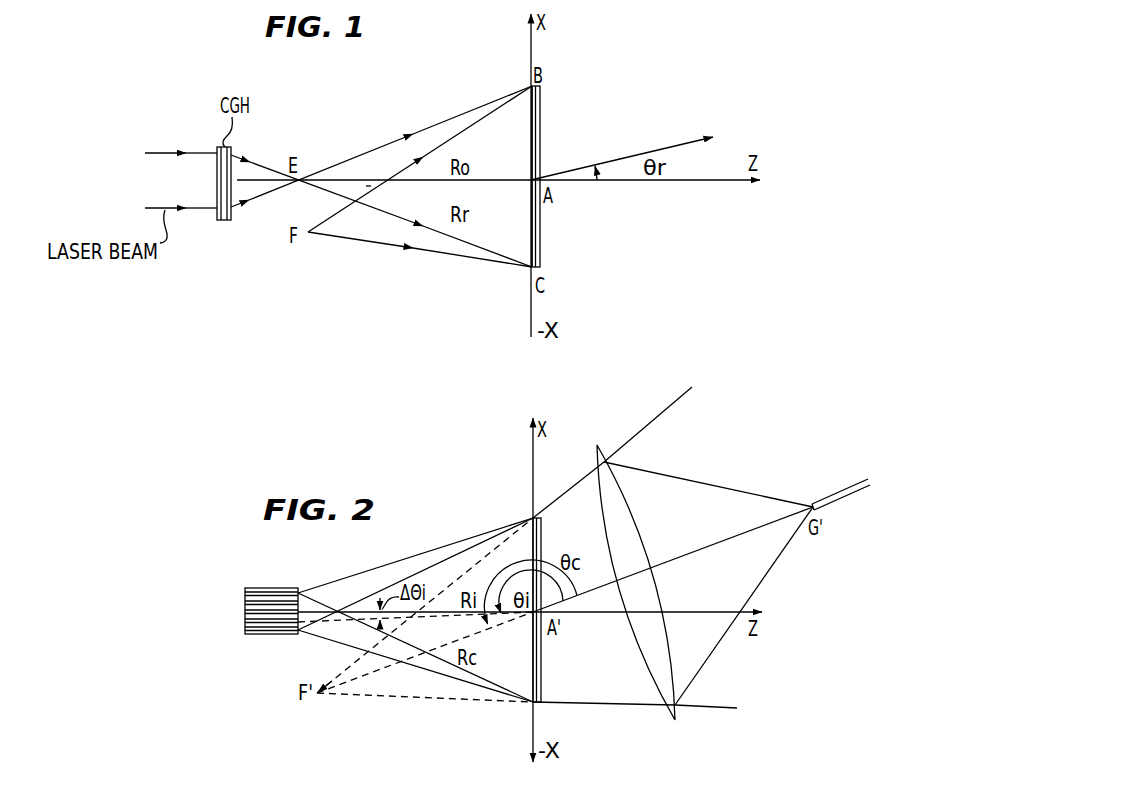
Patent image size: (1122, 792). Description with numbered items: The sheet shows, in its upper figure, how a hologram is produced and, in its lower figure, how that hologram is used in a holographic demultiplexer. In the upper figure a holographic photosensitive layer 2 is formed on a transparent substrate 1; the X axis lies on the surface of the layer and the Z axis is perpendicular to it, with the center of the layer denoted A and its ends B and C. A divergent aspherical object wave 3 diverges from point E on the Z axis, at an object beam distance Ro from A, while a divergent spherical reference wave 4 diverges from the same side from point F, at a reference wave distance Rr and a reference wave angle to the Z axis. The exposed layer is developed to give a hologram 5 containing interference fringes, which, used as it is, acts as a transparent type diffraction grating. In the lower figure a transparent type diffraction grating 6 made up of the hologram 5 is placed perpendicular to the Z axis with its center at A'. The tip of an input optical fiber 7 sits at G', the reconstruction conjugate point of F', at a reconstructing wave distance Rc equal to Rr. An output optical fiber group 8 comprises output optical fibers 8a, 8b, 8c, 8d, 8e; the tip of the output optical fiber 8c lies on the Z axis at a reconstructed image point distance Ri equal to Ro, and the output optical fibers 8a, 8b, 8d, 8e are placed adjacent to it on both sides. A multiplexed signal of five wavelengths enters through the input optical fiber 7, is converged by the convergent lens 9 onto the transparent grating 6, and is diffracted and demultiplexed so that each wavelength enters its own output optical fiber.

In FIG. 1, the transparent substrate 1 is at (541, 101).
In FIG. 1, the holographic photosensitive layer 2 is at (531, 124).
In FIG. 1, the divergent aspherical object wave 3 is at (447, 119).
In FIG. 1, the divergent spherical reference wave 4 is at (459, 259).
In FIG. 1, the hologram 5 is at (532, 155).
In FIG. 2, the transparent type diffraction grating 6 is at (532, 657).
In FIG. 2, the input optical fiber 7 is at (866, 492).
In FIG. 2, the output optical fiber group 8 is at (229, 624).
In FIG. 2, the output optical fiber 8a is at (245, 631).
In FIG. 2, the output optical fiber 8b is at (245, 622).
In FIG. 2, the output optical fiber 8c is at (245, 612).
In FIG. 2, the output optical fiber 8d is at (245, 603).
In FIG. 2, the output optical fiber 8e is at (245, 593).
In FIG. 2, the convergent lens 9 is at (652, 681).